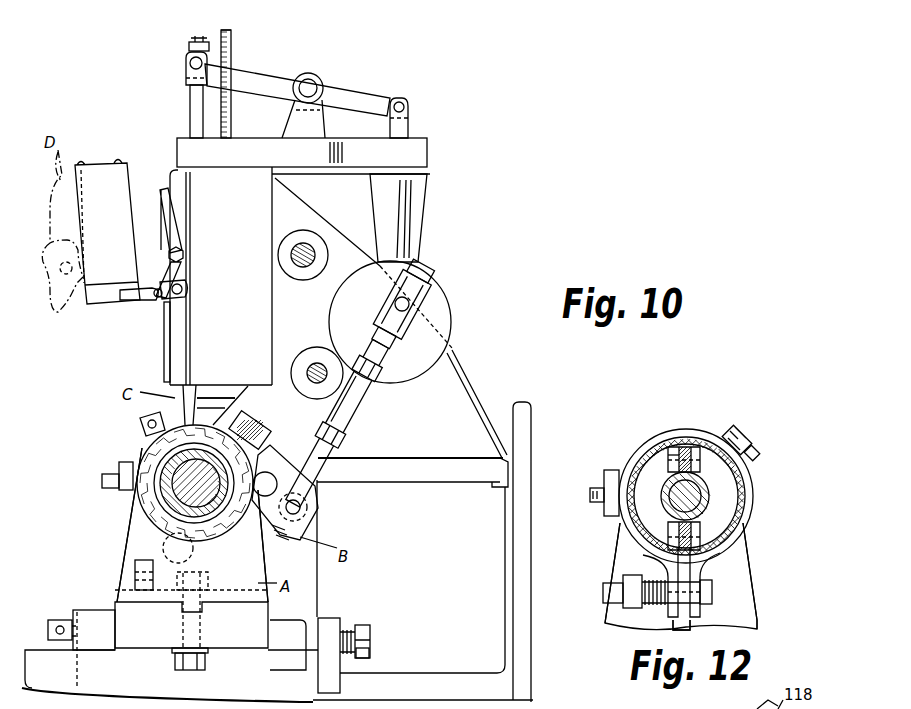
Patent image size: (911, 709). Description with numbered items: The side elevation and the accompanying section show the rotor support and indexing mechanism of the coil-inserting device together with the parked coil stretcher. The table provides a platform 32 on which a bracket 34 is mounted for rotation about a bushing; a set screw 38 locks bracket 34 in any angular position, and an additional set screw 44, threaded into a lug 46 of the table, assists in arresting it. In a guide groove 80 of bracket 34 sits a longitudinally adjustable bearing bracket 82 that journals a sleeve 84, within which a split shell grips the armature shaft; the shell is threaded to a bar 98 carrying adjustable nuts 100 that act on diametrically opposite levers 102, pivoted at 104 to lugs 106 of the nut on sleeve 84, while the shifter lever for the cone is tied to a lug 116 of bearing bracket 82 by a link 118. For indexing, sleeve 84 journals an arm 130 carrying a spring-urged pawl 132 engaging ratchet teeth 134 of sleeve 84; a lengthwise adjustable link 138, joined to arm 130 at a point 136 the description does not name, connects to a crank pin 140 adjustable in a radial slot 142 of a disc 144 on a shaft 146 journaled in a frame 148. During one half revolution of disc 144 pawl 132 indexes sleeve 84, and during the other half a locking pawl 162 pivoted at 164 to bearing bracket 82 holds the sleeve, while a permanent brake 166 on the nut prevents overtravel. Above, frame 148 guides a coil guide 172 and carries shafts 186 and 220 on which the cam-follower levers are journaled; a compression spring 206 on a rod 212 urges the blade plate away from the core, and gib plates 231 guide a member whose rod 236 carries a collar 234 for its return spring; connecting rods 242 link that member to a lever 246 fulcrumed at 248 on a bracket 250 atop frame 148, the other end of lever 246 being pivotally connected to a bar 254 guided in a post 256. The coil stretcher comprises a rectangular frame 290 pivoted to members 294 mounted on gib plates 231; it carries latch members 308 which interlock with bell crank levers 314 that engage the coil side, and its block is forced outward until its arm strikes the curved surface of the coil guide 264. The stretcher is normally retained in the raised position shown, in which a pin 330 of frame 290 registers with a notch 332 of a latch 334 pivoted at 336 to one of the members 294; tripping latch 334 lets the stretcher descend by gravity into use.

In FIG. 10, the platform 32 is at (102, 647).
In FIG. 10, the bracket 34 is at (130, 622).
In FIG. 10, the set screw 38 is at (48, 624).
In FIG. 10, the additional set screw 44 is at (370, 633).
In FIG. 10, the lug 46 is at (335, 656).
In FIG. 10, the guide groove 80 is at (200, 615).
In FIG. 12, the guide groove 80 is at (690, 628).
In FIG. 10, the bearing bracket 82 is at (270, 600).
In FIG. 12, the bearing bracket 82 is at (750, 584).
In FIG. 10, the sleeve 84 is at (163, 475).
In FIG. 10, the bar 98 is at (180, 467).
In FIG. 12, the bar 98 is at (660, 500).
In FIG. 10, the adjustable nuts 100 is at (194, 483).
In FIG. 12, the adjustable nuts 100 is at (670, 500).
In FIG. 12, the levers 102 is at (686, 448).
In FIG. 12, the pivot 104 is at (676, 447).
In FIG. 12, the lugs 106 is at (668, 466).
In FIG. 12, the lug 116 is at (736, 430).
In FIG. 10, the link 118 is at (256, 420).
In FIG. 12, the link 118 is at (749, 445).
In FIG. 10, the arm 130 is at (275, 476).
In FIG. 10, the pawl 132 is at (262, 528).
In FIG. 10, the ratchet teeth 134 is at (276, 450).
In FIG. 10, the pivot pin 136 is at (300, 507).
In FIG. 10, the link 138 is at (350, 407).
In FIG. 10, the crank pin 140 is at (425, 290).
In FIG. 10, the radial slot 142 is at (426, 268).
In FIG. 10, the disc 144 is at (447, 310).
In FIG. 10, the shaft 146 is at (392, 333).
In FIG. 10, the frame 148 is at (470, 392).
In FIG. 10, the locking pawl 162 is at (150, 531).
In FIG. 10, the pivot 164 is at (190, 550).
In FIG. 12, the permanent brake 166 is at (740, 483).
In FIG. 10, the coil guide 172 is at (211, 403).
In FIG. 10, the shaft 186 is at (310, 372).
In FIG. 10, the compression spring 206 is at (232, 45).
In FIG. 10, the rod 212 is at (233, 32).
In FIG. 10, the shaft 220 is at (298, 262).
In FIG. 10, the gib plates 231 is at (192, 199).
In FIG. 10, the nut or collar 234 is at (190, 42).
In FIG. 10, the rod 236 is at (189, 47).
In FIG. 10, the connecting rods 242 is at (186, 115).
In FIG. 10, the lever 246 is at (355, 92).
In FIG. 10, the fulcrum 248 is at (310, 80).
In FIG. 10, the bracket 250 is at (344, 150).
In FIG. 10, the bar 254 is at (408, 123).
In FIG. 10, the post 256 is at (416, 203).
In FIG. 10, the coil guide 264 is at (184, 405).
In FIG. 10, the rectangular frame 290 is at (103, 282).
In FIG. 10, the members 294 is at (185, 312).
In FIG. 10, the latch members 308 is at (68, 228).
In FIG. 10, the bell crank lever 314 is at (82, 266).
In FIG. 10, the pin 330 is at (130, 299).
In FIG. 10, the notch 332 is at (156, 298).
In FIG. 10, the latch 334 is at (173, 237).
In FIG. 10, the pivot 336 is at (185, 254).